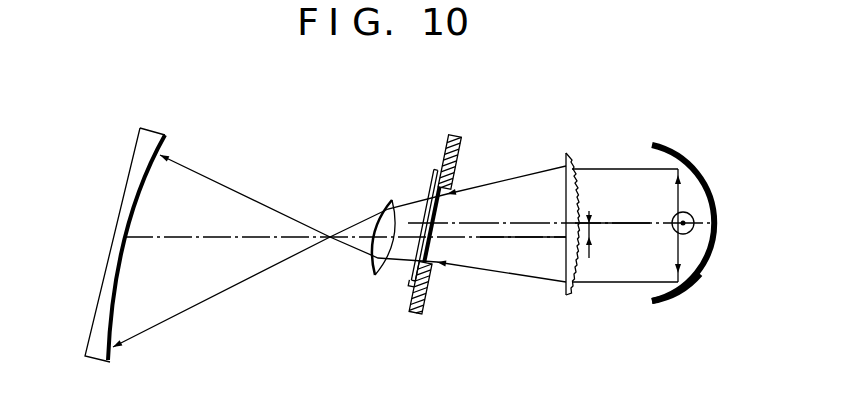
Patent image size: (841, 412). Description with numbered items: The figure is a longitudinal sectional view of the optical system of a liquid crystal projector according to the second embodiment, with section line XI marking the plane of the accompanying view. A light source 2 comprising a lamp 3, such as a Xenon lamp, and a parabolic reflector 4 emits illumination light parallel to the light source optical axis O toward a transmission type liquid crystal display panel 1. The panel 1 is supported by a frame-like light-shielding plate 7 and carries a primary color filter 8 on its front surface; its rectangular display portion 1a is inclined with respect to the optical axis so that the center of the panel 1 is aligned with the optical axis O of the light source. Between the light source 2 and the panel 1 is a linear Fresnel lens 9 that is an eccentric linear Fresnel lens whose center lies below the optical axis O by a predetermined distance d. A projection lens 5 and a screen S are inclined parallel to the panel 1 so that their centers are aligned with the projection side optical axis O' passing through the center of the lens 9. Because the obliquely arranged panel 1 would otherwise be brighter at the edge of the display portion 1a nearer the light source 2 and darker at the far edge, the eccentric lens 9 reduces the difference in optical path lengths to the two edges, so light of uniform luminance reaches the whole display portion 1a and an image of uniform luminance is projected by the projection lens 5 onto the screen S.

The liquid crystal display panel 1 is at (442, 232).
The display portion 1a is at (445, 212).
The light source 2 is at (681, 294).
The lamp 3 is at (673, 216).
The parabolic reflector 4 is at (673, 151).
The projection lens 5 is at (374, 276).
The light-shielding plate 7 is at (416, 306).
The primary color filter 8 is at (437, 177).
The linear Fresnel lens 9 is at (567, 152).
The screen S is at (98, 291).
The optical axis O is at (612, 201).
The projection side optical axis O' is at (523, 256).
The predetermined distance d is at (598, 238).
The section line XI is at (470, 126).